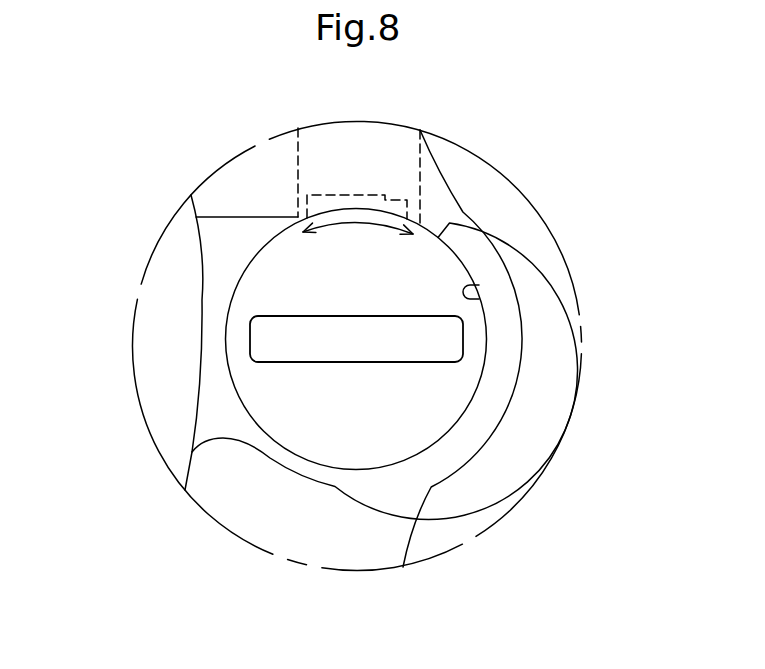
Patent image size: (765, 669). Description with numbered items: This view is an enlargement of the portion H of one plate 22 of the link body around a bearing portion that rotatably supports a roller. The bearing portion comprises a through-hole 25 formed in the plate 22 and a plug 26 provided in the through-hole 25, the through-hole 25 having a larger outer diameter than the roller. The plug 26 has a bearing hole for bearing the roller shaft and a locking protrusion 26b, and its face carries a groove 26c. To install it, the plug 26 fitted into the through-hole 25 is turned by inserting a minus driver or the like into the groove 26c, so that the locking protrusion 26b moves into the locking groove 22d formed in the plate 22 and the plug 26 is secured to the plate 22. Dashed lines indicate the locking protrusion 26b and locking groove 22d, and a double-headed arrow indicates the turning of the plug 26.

The plate 22 is at (542, 436).
The locking groove 22d is at (300, 170).
The through-hole 25 is at (479, 286).
The plug 26 is at (253, 280).
The locking protrusion 26b is at (385, 197).
The groove 26c is at (257, 338).
The portion H is at (532, 190).